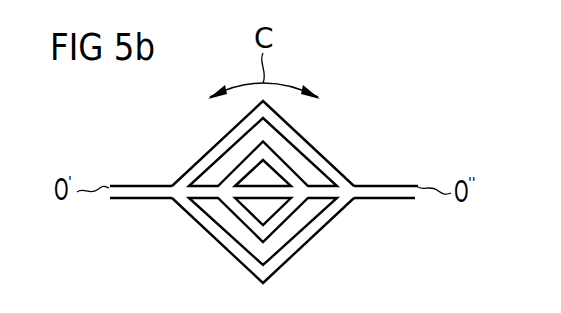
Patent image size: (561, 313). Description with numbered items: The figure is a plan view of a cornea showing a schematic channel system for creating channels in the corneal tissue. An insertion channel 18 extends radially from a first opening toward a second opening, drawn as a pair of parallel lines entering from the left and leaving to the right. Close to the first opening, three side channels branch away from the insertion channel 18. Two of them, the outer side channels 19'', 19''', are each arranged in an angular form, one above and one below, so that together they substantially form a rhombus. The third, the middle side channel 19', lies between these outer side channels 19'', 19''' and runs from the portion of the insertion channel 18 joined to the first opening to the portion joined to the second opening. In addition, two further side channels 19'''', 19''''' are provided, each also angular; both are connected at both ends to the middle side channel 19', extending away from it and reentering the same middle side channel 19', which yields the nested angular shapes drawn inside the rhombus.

The insertion channel 18 is at (131, 186).
The middle side channel 19' is at (241, 221).
The outer side channel 19'' is at (271, 142).
The outer side channel 19''' is at (271, 244).
The further side channel 19'''' is at (294, 152).
The further side channel 19''''' is at (297, 231).